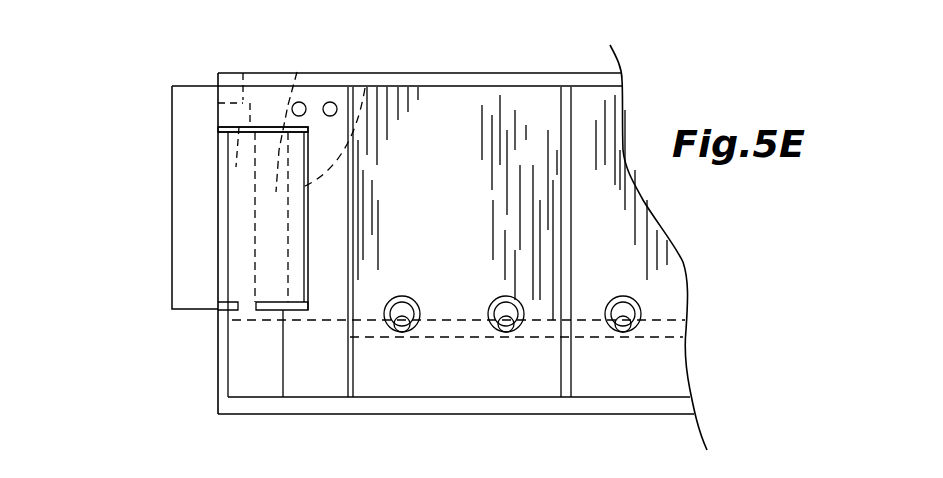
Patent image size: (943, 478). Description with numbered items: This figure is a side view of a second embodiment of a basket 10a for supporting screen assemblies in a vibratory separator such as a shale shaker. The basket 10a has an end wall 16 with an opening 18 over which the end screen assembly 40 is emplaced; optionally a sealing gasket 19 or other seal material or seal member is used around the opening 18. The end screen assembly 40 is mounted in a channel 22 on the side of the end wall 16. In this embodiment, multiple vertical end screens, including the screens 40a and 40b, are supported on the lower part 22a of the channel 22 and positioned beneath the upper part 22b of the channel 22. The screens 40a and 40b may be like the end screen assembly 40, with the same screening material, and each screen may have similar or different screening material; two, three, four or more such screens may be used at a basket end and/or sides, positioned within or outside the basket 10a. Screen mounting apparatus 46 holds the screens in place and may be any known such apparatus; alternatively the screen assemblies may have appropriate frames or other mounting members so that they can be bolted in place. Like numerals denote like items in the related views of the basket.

The basket 10a is at (478, 70).
The end wall 16 is at (218, 370).
The opening 18 is at (228, 182).
The sealing gasket 19 is at (228, 302).
The channel 22 is at (193, 216).
The lower part of the channel 22a is at (272, 307).
The upper part of the channel 22b is at (235, 128).
The end screen assembly 40 is at (242, 60).
The vertical end screen 40a is at (299, 70).
The vertical end screen 40b is at (365, 72).
The screen mounting apparatus 46 is at (506, 331).